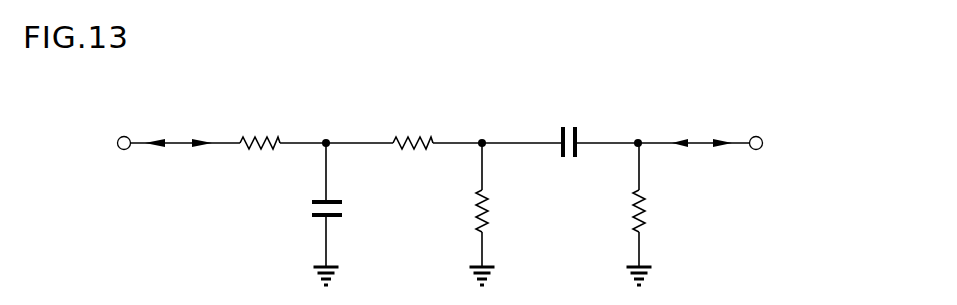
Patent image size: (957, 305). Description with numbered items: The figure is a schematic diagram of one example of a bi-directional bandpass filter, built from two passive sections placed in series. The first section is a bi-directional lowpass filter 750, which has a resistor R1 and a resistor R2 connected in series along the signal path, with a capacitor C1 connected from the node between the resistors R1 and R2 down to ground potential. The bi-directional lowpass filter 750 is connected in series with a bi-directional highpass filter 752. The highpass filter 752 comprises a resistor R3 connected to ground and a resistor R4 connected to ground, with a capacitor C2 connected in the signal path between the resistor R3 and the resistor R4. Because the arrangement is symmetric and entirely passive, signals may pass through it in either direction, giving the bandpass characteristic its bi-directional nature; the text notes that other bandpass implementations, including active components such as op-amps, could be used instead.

The bi-directional lowpass filter 750 is at (450, 108).
The bi-directional highpass filter 752 is at (657, 108).
The resistor R1 is at (260, 126).
The resistor R2 is at (413, 126).
The capacitor C1 is at (343, 214).
The capacitor C2 is at (569, 128).
The resistor R3 is at (496, 214).
The resistor R4 is at (651, 214).